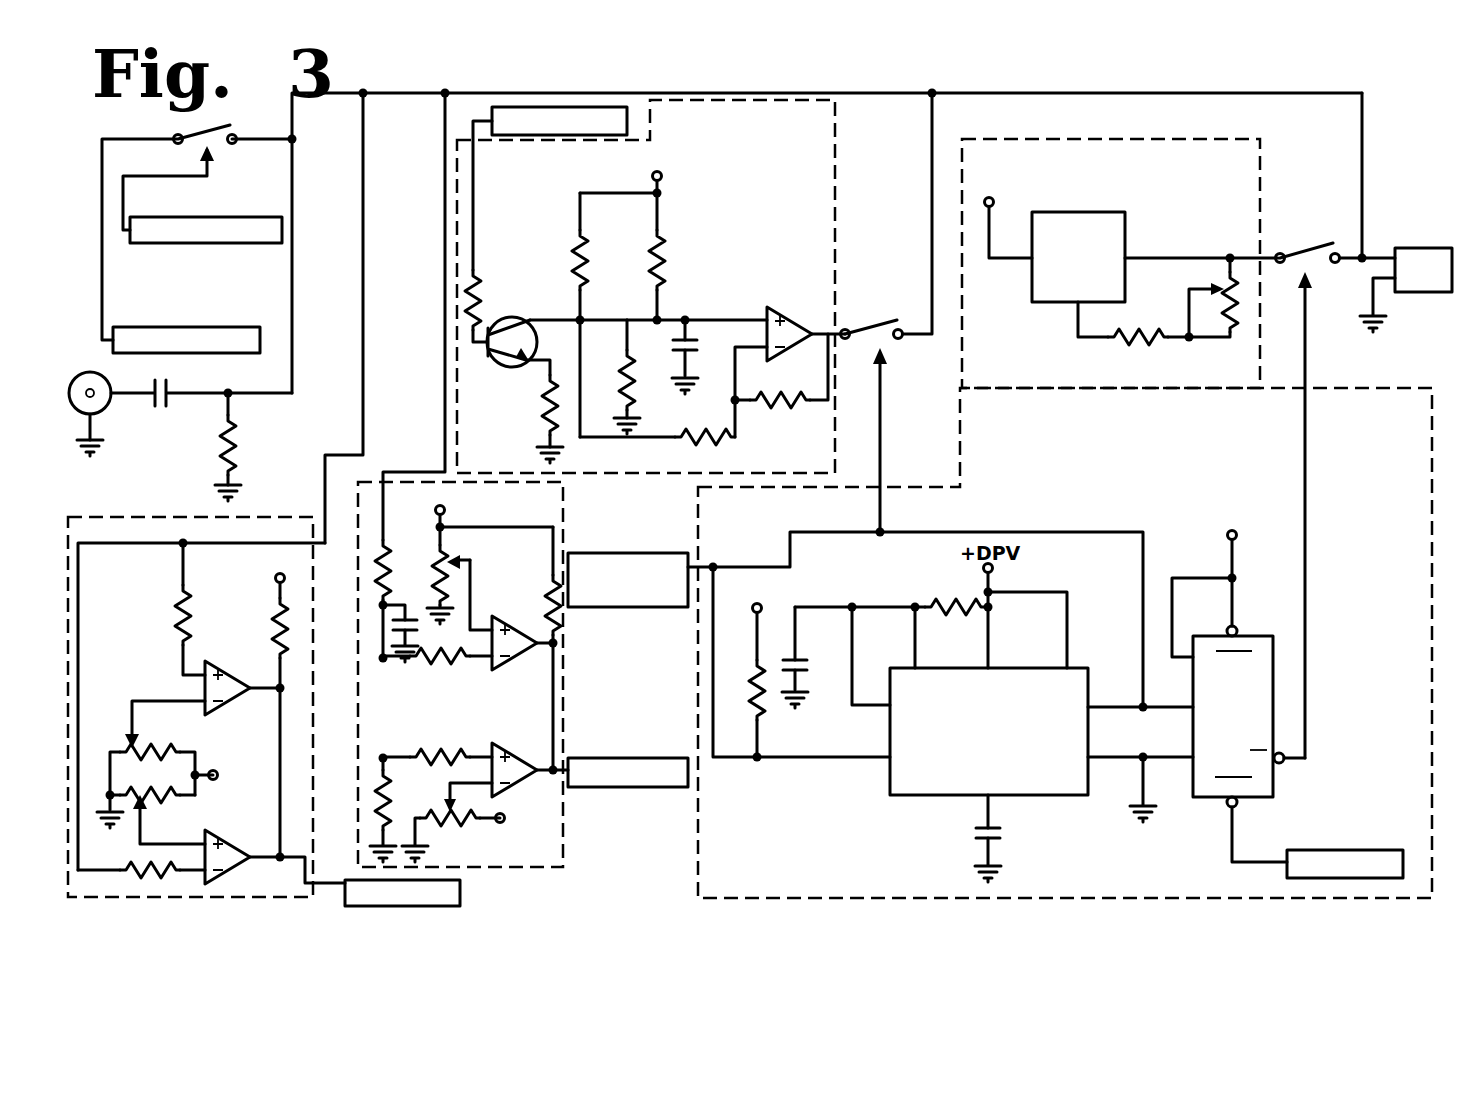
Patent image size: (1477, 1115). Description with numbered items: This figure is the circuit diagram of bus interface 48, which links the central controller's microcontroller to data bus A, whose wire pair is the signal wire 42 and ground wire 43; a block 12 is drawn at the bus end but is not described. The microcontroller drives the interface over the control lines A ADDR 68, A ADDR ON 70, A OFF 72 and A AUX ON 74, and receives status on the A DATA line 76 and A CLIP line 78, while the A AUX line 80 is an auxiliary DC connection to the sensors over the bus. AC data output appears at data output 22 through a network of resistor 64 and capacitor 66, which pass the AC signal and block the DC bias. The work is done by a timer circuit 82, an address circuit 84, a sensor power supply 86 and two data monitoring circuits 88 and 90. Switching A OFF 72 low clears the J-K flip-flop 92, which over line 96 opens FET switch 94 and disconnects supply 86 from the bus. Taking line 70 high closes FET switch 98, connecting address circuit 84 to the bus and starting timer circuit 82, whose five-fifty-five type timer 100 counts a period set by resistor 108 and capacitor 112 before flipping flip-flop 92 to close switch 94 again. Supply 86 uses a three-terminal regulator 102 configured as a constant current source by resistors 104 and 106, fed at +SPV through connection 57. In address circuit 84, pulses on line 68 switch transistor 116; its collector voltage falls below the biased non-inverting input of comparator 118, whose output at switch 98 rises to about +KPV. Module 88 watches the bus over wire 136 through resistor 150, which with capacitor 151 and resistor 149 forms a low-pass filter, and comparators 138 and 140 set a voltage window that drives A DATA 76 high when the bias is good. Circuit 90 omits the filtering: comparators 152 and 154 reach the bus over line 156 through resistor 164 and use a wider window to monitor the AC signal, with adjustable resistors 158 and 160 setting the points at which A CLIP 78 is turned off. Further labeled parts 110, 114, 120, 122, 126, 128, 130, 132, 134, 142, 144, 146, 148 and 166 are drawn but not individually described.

The device 12 is at (1426, 248).
The data output 22 is at (95, 412).
The signal wire 42 is at (1371, 254).
The ground wire 43 is at (1383, 312).
The bus interface 48 is at (634, 845).
The supply line 57 is at (1003, 261).
The resistor 64 is at (238, 432).
The capacitor 66 is at (170, 405).
The A ADDR control line 68 is at (637, 112).
The A ADDR ON control line 70 is at (610, 553).
The A OFF control line 72 is at (1338, 850).
The A AUX ON control line 74 is at (195, 217).
The A DATA status line 76 is at (656, 758).
The A CLIP status line 78 is at (462, 893).
The A AUX line 80 is at (135, 327).
The timer circuit 82 is at (1086, 448).
The address circuit 84 is at (788, 192).
The sensor power supply 86 is at (1218, 183).
The data monitoring circuit 88 is at (565, 507).
The data monitoring circuit 90 is at (192, 517).
The J-K flip-flop 92 is at (1260, 636).
The FET electronic switch 94 is at (1334, 241).
The line 96 is at (1308, 628).
The FET switch 98 is at (905, 318).
The 555 timer 100 is at (1032, 798).
The three terminal power regulator 102 is at (1126, 256).
The resistor 104 is at (1141, 346).
The resistor 106 is at (1229, 341).
The resistor 108 is at (957, 599).
The resistor 110 is at (748, 692).
The capacitor 112 is at (815, 664).
The capacitor 114 is at (967, 834).
The transistor 116 is at (493, 326).
The comparator 118 is at (801, 318).
The resistor 120 is at (668, 251).
The resistor 122 is at (637, 386).
The resistor 126 is at (681, 446).
The feedback resistor 128 is at (773, 411).
The capacitor 130 is at (700, 349).
The resistor 132 is at (574, 256).
The resistor 134 is at (546, 388).
The wire 136 is at (444, 436).
The comparator 138 is at (526, 624).
The comparator 140 is at (531, 752).
The potentiometer 142 is at (458, 551).
The potentiometer 144 is at (445, 829).
The resistor 146 is at (466, 752).
The resistor 148 is at (418, 665).
The resistor 149 is at (393, 820).
The resistor 150 is at (392, 566).
The capacitor 151 is at (415, 621).
The comparator 152 is at (243, 676).
The comparator 154 is at (249, 841).
The line 156 is at (362, 366).
The resistor 158 is at (140, 750).
The resistor 160 is at (158, 803).
The resistor 164 is at (180, 589).
The resistor 166 is at (276, 621).